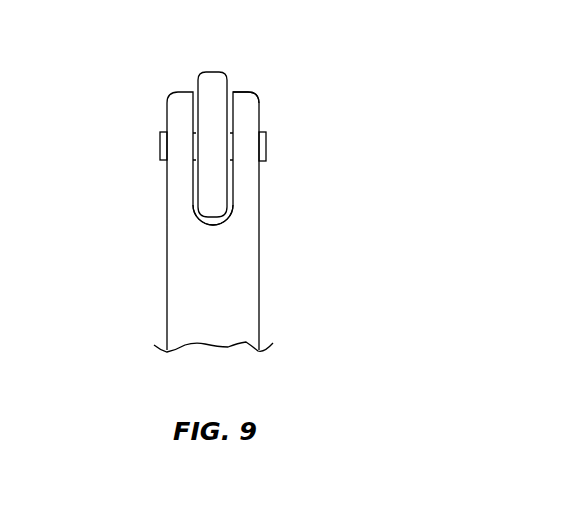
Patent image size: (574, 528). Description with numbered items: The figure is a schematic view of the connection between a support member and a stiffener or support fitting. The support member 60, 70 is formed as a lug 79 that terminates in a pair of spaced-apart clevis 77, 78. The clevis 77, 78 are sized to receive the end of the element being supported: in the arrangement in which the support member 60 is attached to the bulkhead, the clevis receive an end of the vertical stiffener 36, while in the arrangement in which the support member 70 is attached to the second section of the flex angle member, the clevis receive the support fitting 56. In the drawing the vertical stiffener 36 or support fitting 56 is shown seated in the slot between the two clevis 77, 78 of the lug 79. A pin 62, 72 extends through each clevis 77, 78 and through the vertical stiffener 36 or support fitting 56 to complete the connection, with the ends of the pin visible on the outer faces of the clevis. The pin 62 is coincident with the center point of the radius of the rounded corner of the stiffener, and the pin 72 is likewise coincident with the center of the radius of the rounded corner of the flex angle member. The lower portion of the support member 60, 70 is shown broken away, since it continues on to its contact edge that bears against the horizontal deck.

The lug 79 is at (225, 184).
The clevis 78 is at (188, 88).
The clevis 77 is at (243, 90).
The vertical stiffener 36 is at (263, 117).
The support fitting 56 is at (217, 73).
The pin 62 is at (264, 137).
The pin 72 is at (265, 140).
The support member 60 is at (267, 222).
The support member 70 is at (260, 273).